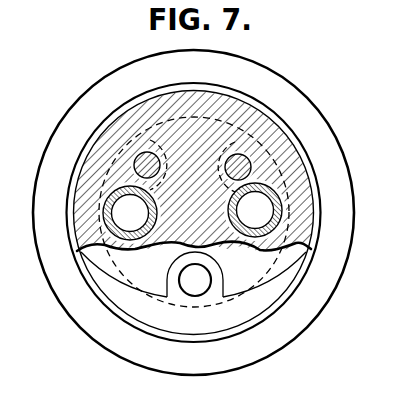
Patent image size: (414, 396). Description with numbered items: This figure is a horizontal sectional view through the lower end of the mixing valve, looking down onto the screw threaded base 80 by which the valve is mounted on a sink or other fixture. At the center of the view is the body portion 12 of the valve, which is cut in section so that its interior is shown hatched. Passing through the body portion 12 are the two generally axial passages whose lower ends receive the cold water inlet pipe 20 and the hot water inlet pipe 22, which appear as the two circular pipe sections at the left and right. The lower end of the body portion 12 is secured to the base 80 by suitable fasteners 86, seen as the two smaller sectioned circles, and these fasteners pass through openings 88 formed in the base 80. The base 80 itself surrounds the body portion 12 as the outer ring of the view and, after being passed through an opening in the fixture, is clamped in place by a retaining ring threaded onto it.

The body portion 12 is at (289, 172).
The cold water inlet pipe 20 is at (113, 230).
The hot water inlet pipe 22 is at (305, 238).
The screw threaded base 80 is at (289, 330).
The fasteners 86 is at (137, 157).
The openings 88 is at (183, 278).